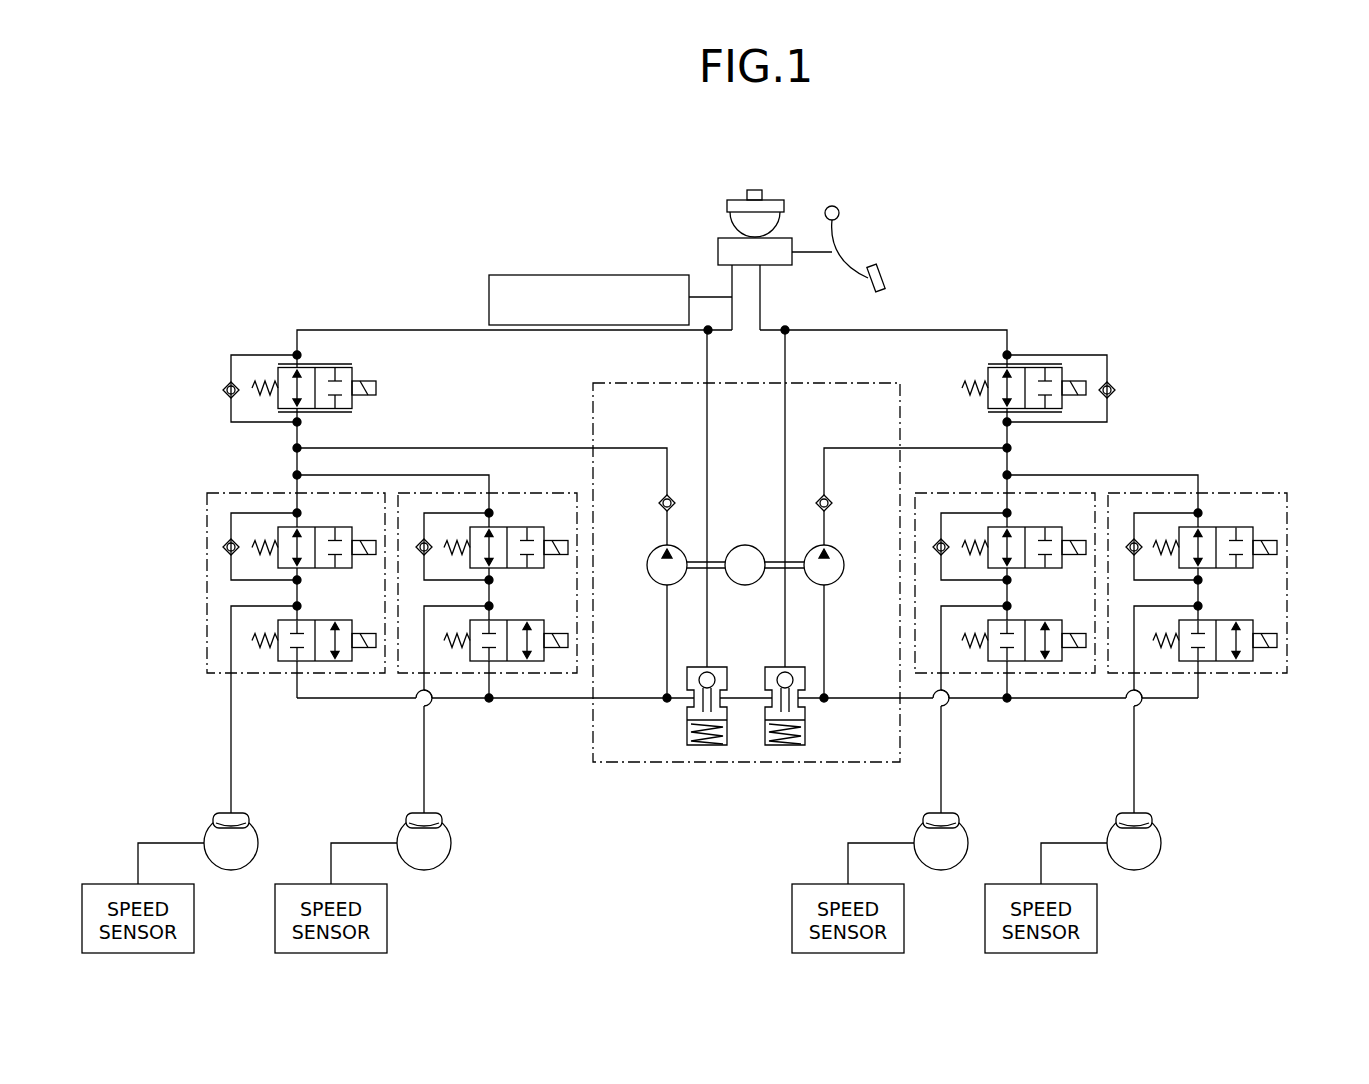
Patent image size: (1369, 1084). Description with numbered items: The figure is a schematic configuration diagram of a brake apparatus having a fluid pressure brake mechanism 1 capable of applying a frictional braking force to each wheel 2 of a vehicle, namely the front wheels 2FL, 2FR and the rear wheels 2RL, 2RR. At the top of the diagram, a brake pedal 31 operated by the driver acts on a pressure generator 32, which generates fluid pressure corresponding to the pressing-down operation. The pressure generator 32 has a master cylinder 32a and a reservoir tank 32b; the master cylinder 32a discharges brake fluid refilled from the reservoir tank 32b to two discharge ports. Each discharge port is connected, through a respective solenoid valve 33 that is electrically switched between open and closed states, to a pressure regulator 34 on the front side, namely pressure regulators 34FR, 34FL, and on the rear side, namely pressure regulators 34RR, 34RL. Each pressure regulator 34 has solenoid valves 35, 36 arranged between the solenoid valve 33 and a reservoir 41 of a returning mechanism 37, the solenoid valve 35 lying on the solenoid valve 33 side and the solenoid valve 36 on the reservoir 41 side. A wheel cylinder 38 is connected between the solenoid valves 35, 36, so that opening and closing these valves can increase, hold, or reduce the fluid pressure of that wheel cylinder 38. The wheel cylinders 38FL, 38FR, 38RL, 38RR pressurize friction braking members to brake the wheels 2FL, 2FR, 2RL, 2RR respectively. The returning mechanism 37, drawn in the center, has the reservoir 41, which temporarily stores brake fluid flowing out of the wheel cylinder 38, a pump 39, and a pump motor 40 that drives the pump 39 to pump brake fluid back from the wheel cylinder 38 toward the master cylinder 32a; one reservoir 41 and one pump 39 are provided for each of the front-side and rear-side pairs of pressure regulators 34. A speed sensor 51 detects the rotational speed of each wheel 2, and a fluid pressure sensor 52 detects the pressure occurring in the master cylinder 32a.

The fluid pressure brake mechanism 1 is at (1118, 185).
The wheel 2 is at (682, 909).
The front right wheel 2FR is at (231, 870).
The front left wheel 2FL is at (424, 870).
The rear right wheel 2RR is at (941, 870).
The rear left wheel 2RL is at (1134, 870).
The brake pedal 31 is at (887, 272).
The pressure generator 32 is at (722, 206).
The master cylinder 32a is at (718, 252).
The reservoir tank 32b is at (741, 200).
The solenoid valve 33 is at (340, 364).
The pressure regulator 34 is at (749, 547).
The front right pressure regulator 34FR is at (220, 493).
The front left pressure regulator 34FL is at (531, 493).
The rear right pressure regulator 34RR is at (980, 493).
The rear left pressure regulator 34RL is at (1210, 493).
The solenoid valve 35 is at (318, 527).
The solenoid valve 36 is at (318, 620).
The returning mechanism 37 is at (793, 762).
The wheel cylinder 38 is at (732, 829).
The front right wheel cylinder 38FR is at (233, 812).
The front left wheel cylinder 38FL is at (426, 812).
The rear right wheel cylinder 38RR is at (943, 812).
The rear left wheel cylinder 38RL is at (1136, 812).
The pump 39 is at (660, 583).
The pump motor 40 is at (745, 587).
The reservoir 41 is at (687, 731).
The speed sensor 51 is at (145, 882).
The fluid pressure sensor 52 is at (586, 275).